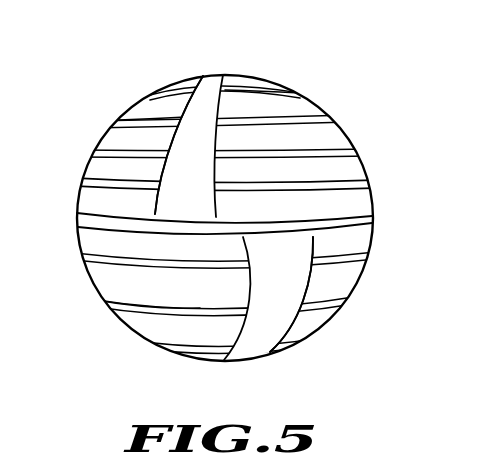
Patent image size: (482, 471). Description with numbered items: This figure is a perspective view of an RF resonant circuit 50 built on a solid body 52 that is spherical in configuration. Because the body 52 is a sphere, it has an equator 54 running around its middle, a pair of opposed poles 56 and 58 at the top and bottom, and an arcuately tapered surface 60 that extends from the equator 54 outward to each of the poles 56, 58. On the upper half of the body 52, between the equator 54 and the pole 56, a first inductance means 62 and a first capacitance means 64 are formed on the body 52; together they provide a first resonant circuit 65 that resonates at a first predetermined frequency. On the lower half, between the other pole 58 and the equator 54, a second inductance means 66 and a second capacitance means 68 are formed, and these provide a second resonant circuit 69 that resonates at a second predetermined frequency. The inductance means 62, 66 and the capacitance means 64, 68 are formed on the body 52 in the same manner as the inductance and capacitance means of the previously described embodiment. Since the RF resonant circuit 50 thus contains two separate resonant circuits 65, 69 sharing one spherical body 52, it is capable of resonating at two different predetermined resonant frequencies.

The RF resonant circuit 50 is at (375, 25).
The solid body 52 is at (307, 104).
The equator 54 is at (335, 220).
The pole 56 is at (228, 82).
The pole 58 is at (224, 360).
The arcuately tapered surface 60 is at (358, 158).
The first inductance means 62 is at (160, 127).
The first capacitance means 64 is at (190, 110).
The first resonant circuit 65 is at (99, 138).
The second inductance means 66 is at (128, 300).
The second capacitance means 68 is at (265, 323).
The second resonant circuit 69 is at (347, 307).